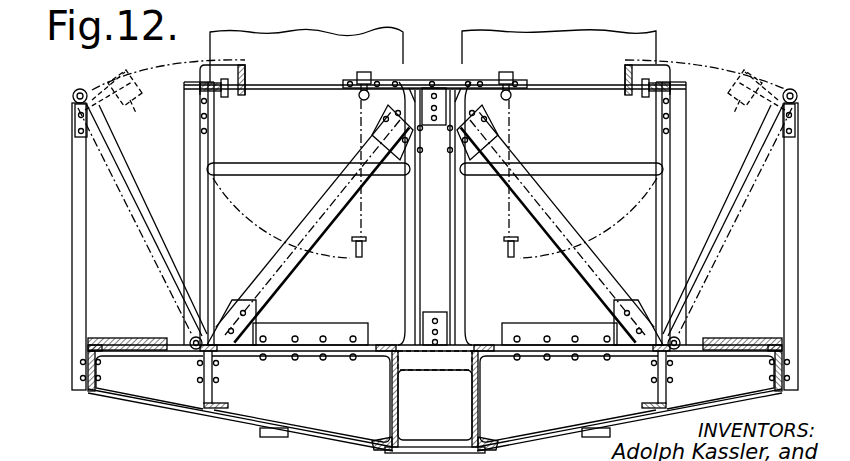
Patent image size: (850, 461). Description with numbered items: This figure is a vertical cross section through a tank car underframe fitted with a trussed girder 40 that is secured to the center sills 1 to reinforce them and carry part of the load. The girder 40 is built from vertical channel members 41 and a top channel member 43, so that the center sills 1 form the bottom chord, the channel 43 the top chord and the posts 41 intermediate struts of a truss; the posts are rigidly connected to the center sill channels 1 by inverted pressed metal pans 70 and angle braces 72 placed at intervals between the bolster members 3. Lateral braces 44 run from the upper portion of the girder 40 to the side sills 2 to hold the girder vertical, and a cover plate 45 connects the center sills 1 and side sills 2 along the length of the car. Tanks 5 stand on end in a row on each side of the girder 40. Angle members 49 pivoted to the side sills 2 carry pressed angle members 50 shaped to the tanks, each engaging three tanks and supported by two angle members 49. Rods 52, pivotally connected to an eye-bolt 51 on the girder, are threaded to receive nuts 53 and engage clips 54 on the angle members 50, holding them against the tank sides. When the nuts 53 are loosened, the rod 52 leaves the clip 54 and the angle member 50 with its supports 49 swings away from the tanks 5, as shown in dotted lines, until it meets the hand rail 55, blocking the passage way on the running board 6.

The center sills 1 is at (397, 400).
The side sills 2 is at (216, 398).
The bolster members 3 is at (558, 418).
The tanks 5 is at (294, 48).
The running boards 6 is at (121, 338).
The trussed girder 40 is at (443, 80).
The vertical channel members 41 is at (435, 213).
The top channel member 43 is at (412, 86).
The lateral braces 44 is at (328, 212).
The cover plate 45 is at (379, 332).
The angle members 49 is at (193, 170).
The pressed angle members 50 is at (112, 84).
The eye-bolt 51 is at (365, 72).
The rods 52 is at (296, 80).
The nuts 53 is at (224, 97).
The clips 54 is at (246, 93).
The hand rail 55 is at (73, 97).
The inverted pressed metal pans 70 is at (422, 362).
The angle braces 72 is at (433, 312).